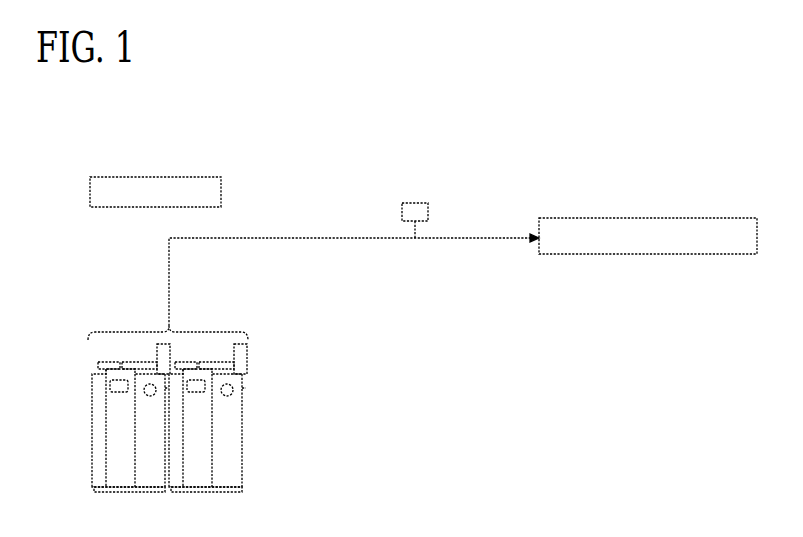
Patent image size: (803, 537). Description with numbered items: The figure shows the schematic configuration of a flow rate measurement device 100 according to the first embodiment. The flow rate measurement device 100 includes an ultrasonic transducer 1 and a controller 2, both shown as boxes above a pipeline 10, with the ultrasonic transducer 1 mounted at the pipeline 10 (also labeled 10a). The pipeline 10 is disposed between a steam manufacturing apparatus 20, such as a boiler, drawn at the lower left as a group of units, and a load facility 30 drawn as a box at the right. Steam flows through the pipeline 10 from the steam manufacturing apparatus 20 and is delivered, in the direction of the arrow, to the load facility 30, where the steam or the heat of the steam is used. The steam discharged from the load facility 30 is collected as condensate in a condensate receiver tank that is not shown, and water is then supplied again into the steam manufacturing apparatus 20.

The flow rate measurement device 100 is at (549, 137).
The ultrasonic transducer 1 is at (410, 203).
The controller 2 is at (155, 177).
The pipeline 10 is at (354, 249).
The conductor of electric wire 10a is at (275, 237).
The steam manufacturing apparatus 20 is at (78, 422).
The load facility 30 is at (667, 218).